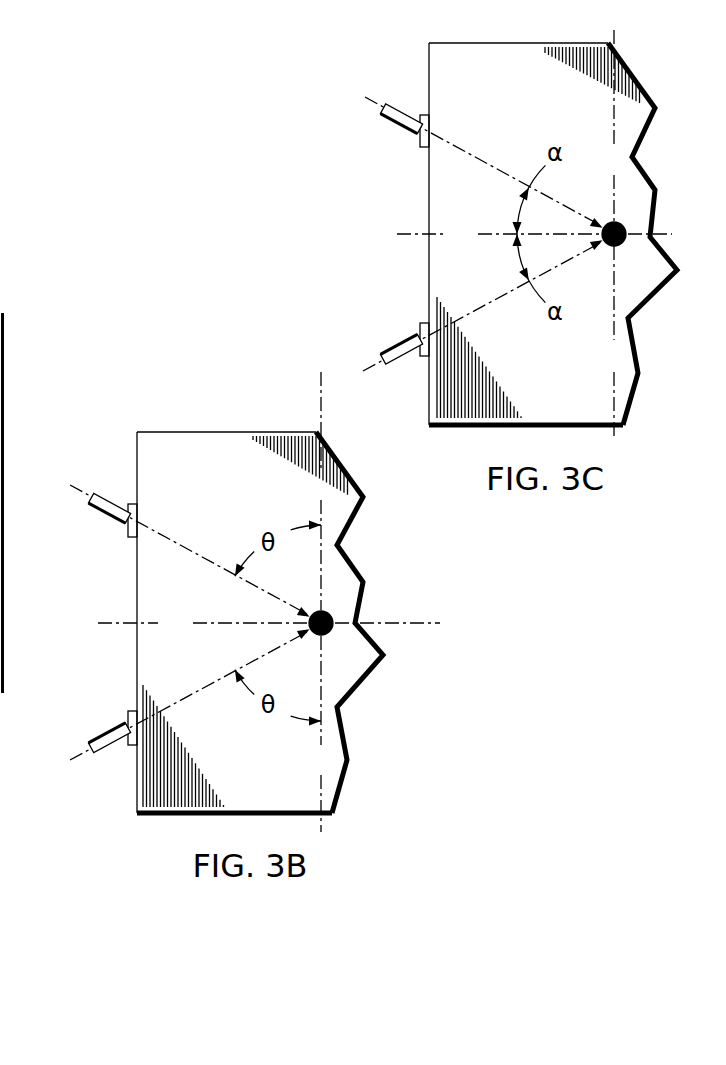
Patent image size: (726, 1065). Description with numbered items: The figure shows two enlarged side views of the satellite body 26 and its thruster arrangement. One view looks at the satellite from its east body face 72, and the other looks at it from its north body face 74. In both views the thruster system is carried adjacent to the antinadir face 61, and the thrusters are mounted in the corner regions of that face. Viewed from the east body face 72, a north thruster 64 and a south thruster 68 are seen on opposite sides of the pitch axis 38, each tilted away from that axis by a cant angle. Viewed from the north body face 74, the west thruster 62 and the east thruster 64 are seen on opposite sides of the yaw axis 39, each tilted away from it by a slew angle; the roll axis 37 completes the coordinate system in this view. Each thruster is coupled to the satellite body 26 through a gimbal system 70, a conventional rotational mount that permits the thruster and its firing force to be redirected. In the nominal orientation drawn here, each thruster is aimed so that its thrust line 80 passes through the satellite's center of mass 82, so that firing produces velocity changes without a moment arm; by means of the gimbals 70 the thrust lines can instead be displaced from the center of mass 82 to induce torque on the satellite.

In FIG. 3C, the satellite body 26 is at (652, 168).
In FIG. 3B, the satellite body 26 is at (368, 683).
In FIG. 3C, the roll axis 37 is at (611, 235).
In FIG. 3B, the pitch axis 38 is at (320, 602).
In FIG. 3C, the yaw axis 39 is at (534, 234).
In FIG. 3B, the yaw axis 39 is at (269, 624).
In FIG. 3C, the antinadir face 61 is at (429, 157).
In FIG. 3B, the antinadir face 61 is at (137, 790).
In FIG. 3C, the thruster 62 is at (392, 105).
In FIG. 3C, the thruster 64 is at (393, 352).
In FIG. 3B, the thruster 64 is at (106, 514).
In FIG. 3B, the thruster 68 is at (113, 727).
In FIG. 3C, the gimbal system 70 is at (418, 143).
In FIG. 3B, the gimbal system 70 is at (128, 505).
In FIG. 3C, the east body face 72 is at (460, 428).
In FIG. 3B, the east body face 72 is at (264, 457).
In FIG. 3C, the north body face 74 is at (449, 300).
In FIG. 3B, the north body face 74 is at (183, 432).
In FIG. 3C, the thrust line 80 is at (470, 150).
In FIG. 3B, the thrust line 80 is at (195, 553).
In FIG. 3C, the center of mass 82 is at (624, 241).
In FIG. 3B, the center of mass 82 is at (333, 616).